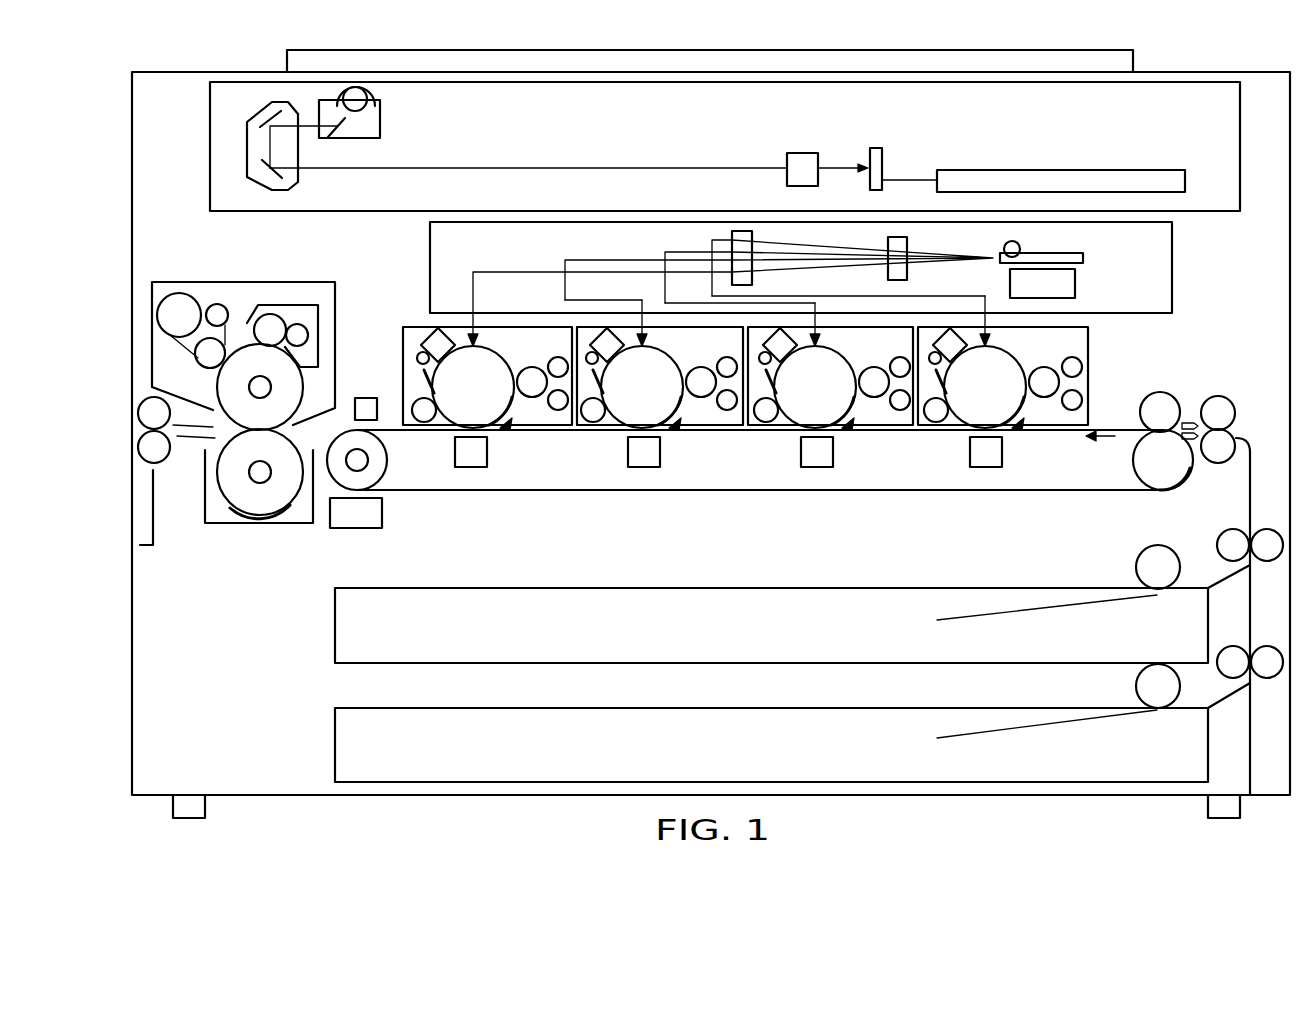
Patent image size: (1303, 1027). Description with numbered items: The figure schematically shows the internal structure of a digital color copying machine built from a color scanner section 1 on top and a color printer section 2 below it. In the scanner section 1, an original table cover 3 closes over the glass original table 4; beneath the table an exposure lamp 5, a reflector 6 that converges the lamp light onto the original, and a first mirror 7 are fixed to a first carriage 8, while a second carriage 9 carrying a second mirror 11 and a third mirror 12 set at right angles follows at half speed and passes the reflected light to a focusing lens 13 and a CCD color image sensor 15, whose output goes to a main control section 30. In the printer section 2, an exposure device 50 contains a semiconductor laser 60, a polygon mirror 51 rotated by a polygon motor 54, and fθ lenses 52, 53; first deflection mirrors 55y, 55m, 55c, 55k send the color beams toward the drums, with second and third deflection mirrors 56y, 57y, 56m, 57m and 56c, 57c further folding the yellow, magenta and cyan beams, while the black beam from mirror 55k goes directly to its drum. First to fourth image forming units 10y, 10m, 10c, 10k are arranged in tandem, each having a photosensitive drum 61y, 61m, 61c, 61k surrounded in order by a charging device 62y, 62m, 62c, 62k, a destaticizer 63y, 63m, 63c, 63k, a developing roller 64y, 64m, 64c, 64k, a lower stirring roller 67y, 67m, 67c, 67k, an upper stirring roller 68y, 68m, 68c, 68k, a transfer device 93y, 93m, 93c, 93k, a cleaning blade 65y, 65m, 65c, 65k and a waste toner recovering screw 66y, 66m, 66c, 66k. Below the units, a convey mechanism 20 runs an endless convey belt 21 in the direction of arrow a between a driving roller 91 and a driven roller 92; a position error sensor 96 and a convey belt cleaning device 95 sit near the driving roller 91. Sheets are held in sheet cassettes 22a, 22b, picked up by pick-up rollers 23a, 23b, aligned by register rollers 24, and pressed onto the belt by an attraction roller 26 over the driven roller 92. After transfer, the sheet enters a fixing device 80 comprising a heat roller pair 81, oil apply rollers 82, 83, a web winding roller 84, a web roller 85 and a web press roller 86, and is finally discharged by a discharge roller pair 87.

The color scanner section 1 is at (598, 88).
The color printer section 2 is at (352, 262).
The original table cover 3 is at (495, 62).
The original table 4 is at (545, 78).
The exposure lamp 5 is at (369, 95).
The reflector 6 is at (381, 121).
The first mirror 7 is at (340, 138).
The first carriage 8 is at (384, 106).
The second carriage 9 is at (297, 180).
The second mirror 11 is at (266, 118).
The third mirror 12 is at (258, 182).
The focusing lens 13 is at (802, 152).
The CCD color image sensor 15 is at (876, 148).
The main control section 30 is at (1032, 169).
The exposure device 50 is at (1173, 258).
The polygon mirror 51 is at (1086, 256).
The fθ lens 52 is at (908, 246).
The fθ lens 53 is at (754, 250).
The polygon motor 54 is at (1078, 280).
The semiconductor laser 60 is at (1016, 246).
The first deflection mirror 55k is at (471, 270).
The first deflection mirror 55c is at (563, 262).
The second deflection mirror 56c is at (564, 300).
The third deflection mirror 57c is at (642, 280).
The first deflection mirror 55m is at (665, 245).
The second deflection mirror 56m is at (668, 290).
The third deflection mirror 57m is at (816, 300).
The first deflection mirror 55y is at (712, 245).
The second deflection mirror 56y is at (714, 300).
The third deflection mirror 57y is at (1072, 292).
The fourth image forming unit 10k is at (530, 426).
The third image forming unit 10c is at (672, 440).
The second image forming unit 10m is at (836, 440).
The first image forming unit 10y is at (1002, 432).
The photosensitive drum 61k is at (490, 345).
The photosensitive drum 61c is at (656, 366).
The photosensitive drum 61m is at (824, 374).
The photosensitive drum 61y is at (1012, 356).
The charging device 62k is at (424, 332).
The charging device 62c is at (610, 332).
The charging device 62m is at (788, 336).
The charging device 62y is at (958, 332).
The destaticizer 63k is at (416, 356).
The destaticizer 63c is at (592, 351).
The destaticizer 63m is at (766, 351).
The destaticizer 63y is at (936, 351).
The developing roller 64k is at (506, 426).
The developing roller 64c is at (676, 428).
The developing roller 64m is at (850, 428).
The developing roller 64y is at (1020, 428).
The cleaning blade 65k is at (420, 378).
The cleaning blade 65c is at (594, 396).
The cleaning blade 65m is at (770, 396).
The cleaning blade 65y is at (938, 396).
The waste toner recovering screw 66k is at (412, 400).
The waste toner recovering screw 66c is at (598, 422).
The waste toner recovering screw 66m is at (768, 422).
The waste toner recovering screw 66y is at (940, 422).
The lower stirring roller 67k is at (556, 412).
The lower stirring roller 67c is at (727, 412).
The lower stirring roller 67m is at (900, 412).
The lower stirring roller 67y is at (1074, 412).
The upper stirring roller 68k is at (530, 369).
The upper stirring roller 68c is at (742, 420).
The upper stirring roller 68m is at (884, 368).
The upper stirring roller 68y is at (1074, 362).
The transfer device 93k is at (470, 470).
The transfer device 93c is at (634, 470).
The transfer device 93m is at (816, 470).
The transfer device 93y is at (984, 470).
The convey mechanism 20 is at (1056, 482).
The convey belt 21 is at (1116, 430).
The arrow a is at (1109, 439).
The driving roller 91 is at (382, 482).
The driven roller 92 is at (1138, 476).
The position error sensor 96 is at (377, 416).
The convey belt cleaning device 95 is at (354, 529).
The attraction roller 26 is at (1165, 392).
The register rollers 24 is at (1220, 396).
The sheet cassette 22a is at (335, 628).
The sheet cassette 22b is at (335, 746).
The pick-up roller 23a is at (1136, 566).
The pick-up roller 23b is at (1136, 688).
The fixing device 80 is at (345, 310).
The heat roller pair 81 is at (255, 516).
The oil apply roller 82 is at (298, 324).
The oil apply roller 83 is at (270, 314).
The web winding roller 84 is at (216, 304).
The web roller 85 is at (180, 293).
The web press roller 86 is at (196, 360).
The discharge roller pair 87 is at (158, 466).